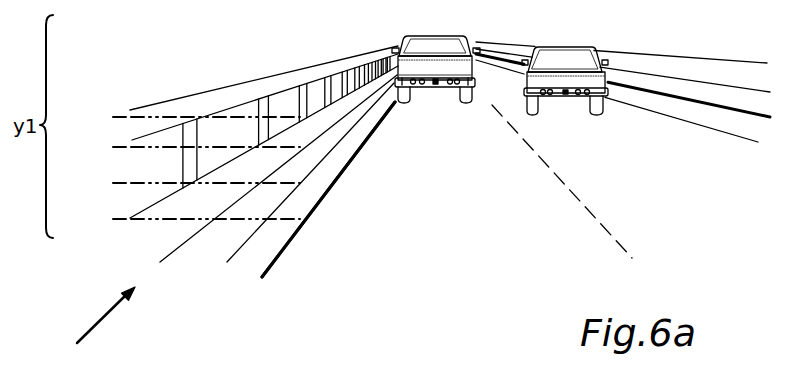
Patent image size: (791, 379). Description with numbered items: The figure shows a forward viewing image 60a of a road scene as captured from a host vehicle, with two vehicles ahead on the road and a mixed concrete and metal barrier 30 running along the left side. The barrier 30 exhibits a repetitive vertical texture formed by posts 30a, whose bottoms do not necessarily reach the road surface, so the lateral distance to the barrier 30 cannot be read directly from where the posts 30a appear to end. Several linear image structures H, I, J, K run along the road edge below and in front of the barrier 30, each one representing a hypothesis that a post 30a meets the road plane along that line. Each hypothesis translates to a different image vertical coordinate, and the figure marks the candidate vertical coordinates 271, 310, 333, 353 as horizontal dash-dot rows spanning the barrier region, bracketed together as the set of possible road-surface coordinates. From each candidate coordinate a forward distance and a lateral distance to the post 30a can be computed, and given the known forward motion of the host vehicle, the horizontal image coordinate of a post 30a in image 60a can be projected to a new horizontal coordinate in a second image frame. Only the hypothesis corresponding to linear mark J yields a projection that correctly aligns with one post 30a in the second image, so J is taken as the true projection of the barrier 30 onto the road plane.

The image vertical coordinate hypothesis 271 is at (186, 117).
The image vertical coordinate hypothesis 310 is at (185, 146).
The image vertical coordinate hypothesis 333 is at (185, 184).
The image vertical coordinate hypothesis 353 is at (185, 221).
The barrier 30 is at (293, 82).
The post 30a is at (328, 240).
The image 60a is at (89, 333).
The linear image structure K is at (258, 152).
The linear image structure J is at (272, 178).
The linear image structure I is at (306, 182).
The linear image structure H is at (324, 202).